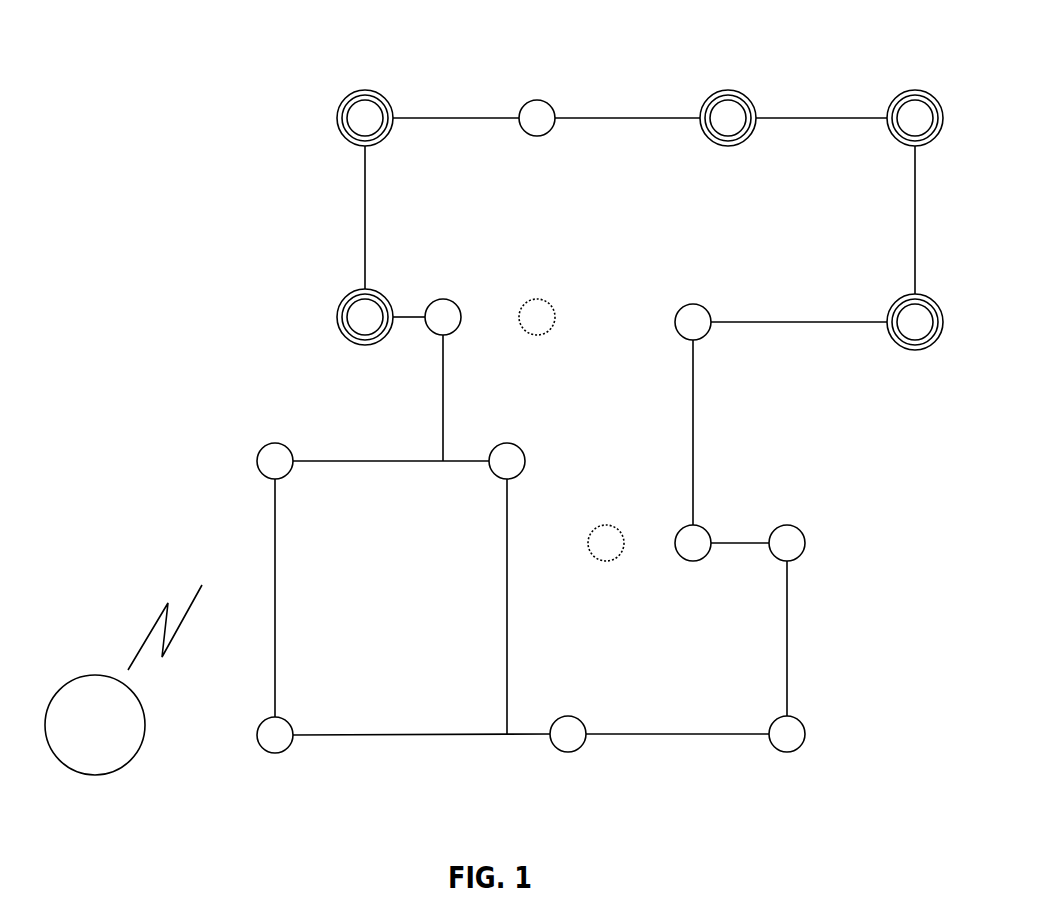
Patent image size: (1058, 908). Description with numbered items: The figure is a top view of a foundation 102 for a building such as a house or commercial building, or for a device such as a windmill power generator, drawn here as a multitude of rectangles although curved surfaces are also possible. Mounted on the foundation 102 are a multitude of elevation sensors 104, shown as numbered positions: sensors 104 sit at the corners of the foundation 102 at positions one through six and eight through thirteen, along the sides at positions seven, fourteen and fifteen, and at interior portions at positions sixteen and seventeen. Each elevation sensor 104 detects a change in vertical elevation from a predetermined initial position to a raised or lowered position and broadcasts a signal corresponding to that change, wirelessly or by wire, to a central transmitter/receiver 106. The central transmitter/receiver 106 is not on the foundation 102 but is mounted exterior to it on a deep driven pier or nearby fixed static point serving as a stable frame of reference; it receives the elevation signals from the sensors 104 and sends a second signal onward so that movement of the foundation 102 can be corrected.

The foundation 102 is at (340, 458).
The elevation sensor 104 is at (364, 90).
The central transmitter/receiver 106 is at (97, 675).